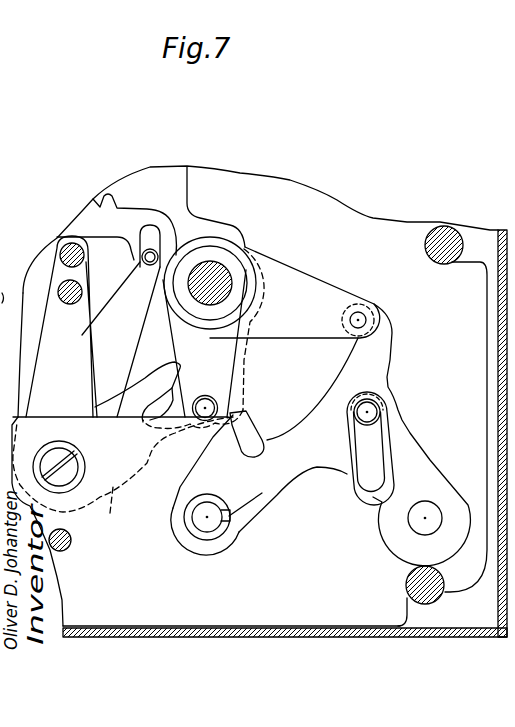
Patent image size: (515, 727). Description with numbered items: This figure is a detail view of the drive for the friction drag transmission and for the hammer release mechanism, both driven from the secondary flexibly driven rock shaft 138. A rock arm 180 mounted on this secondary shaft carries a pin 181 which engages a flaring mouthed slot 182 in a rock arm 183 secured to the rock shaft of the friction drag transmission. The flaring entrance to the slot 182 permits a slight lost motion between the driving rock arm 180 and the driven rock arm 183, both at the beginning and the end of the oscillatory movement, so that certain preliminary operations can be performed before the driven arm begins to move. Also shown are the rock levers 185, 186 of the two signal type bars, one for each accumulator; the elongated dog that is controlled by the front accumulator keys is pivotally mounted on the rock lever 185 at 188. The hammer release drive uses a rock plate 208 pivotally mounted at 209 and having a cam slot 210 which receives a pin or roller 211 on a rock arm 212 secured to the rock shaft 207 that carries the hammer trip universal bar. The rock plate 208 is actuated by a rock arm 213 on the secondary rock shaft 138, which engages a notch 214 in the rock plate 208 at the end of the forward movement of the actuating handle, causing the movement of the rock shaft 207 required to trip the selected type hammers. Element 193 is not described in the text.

The secondary flexibly driven rock shaft 138 is at (247, 248).
The rock arm 180 is at (240, 377).
The pin 181 is at (232, 403).
The flaring mouthed slot 182 is at (147, 457).
The rock arm 183 is at (110, 513).
The rock lever 185 is at (80, 274).
The rock lever 186 is at (82, 335).
The pivot of elongated dog 188 is at (62, 249).
The stud 193 is at (63, 282).
The rock shaft 207 is at (413, 530).
The rock plate 208 is at (265, 492).
The pivot of rock plate 209 is at (220, 533).
The cam slot 210 is at (350, 474).
The pin or roller 211 is at (368, 412).
The rock arm 212 is at (412, 445).
The rock arm 213 is at (308, 288).
The notch 214 is at (260, 450).